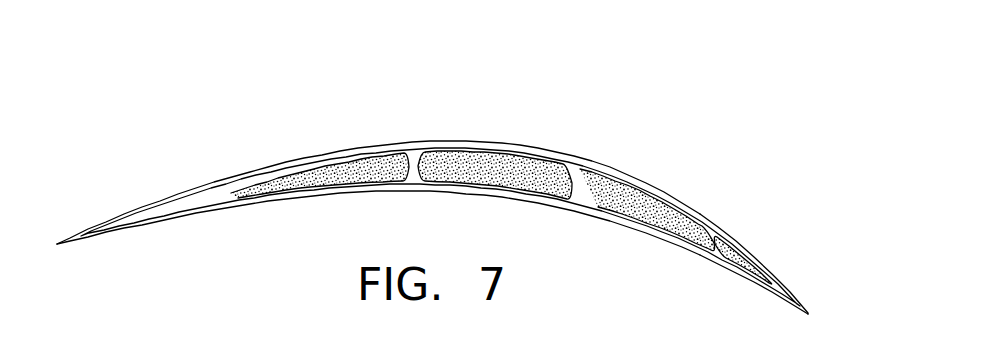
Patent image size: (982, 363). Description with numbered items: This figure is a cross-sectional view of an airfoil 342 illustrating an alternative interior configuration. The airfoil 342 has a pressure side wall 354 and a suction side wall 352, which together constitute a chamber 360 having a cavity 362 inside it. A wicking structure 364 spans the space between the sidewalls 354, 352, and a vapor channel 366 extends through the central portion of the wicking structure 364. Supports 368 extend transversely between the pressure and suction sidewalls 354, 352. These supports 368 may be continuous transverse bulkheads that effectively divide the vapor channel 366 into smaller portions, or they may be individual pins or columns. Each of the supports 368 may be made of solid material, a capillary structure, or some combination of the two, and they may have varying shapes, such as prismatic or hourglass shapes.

The airfoil 342 is at (556, 70).
The suction side wall 352 is at (667, 193).
The pressure side wall 354 is at (631, 229).
The chamber 360 is at (733, 234).
The cavity 362 is at (784, 292).
The wicking structure 364 is at (205, 200).
The vapor channel 366 is at (337, 165).
The supports 368 is at (573, 180).